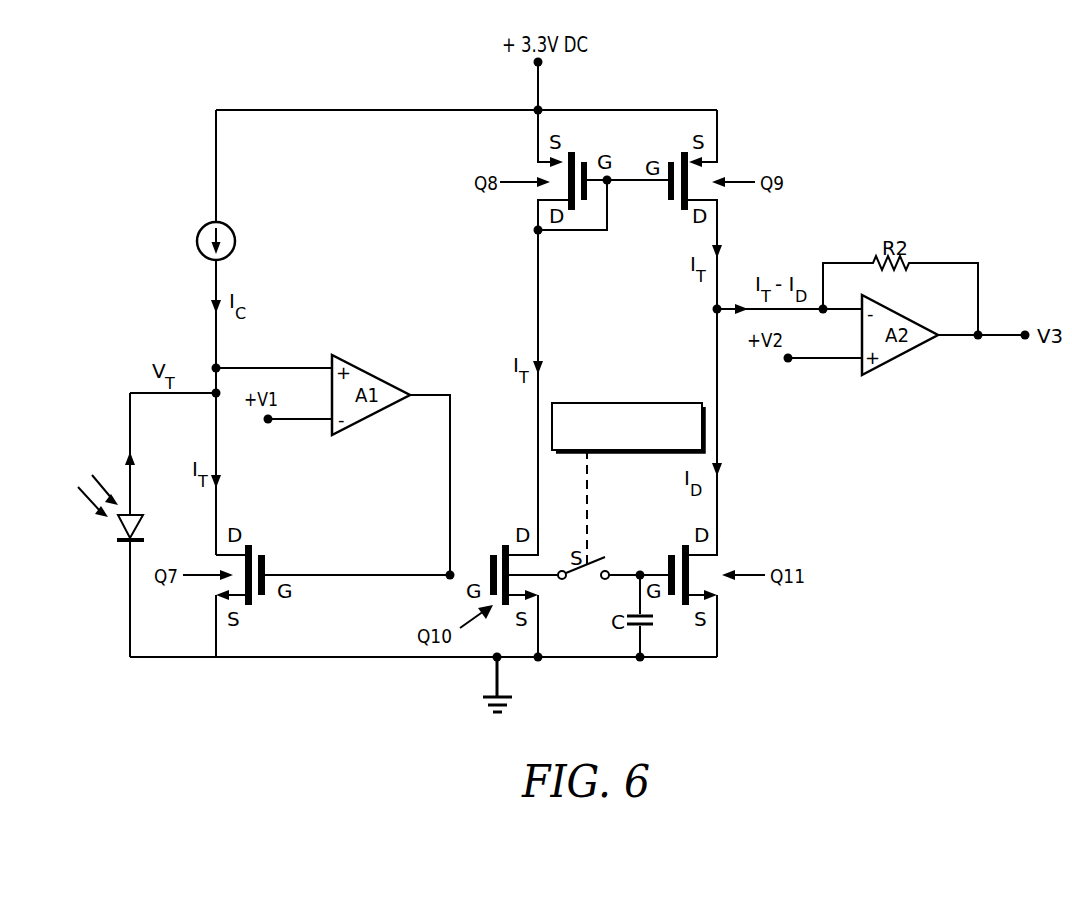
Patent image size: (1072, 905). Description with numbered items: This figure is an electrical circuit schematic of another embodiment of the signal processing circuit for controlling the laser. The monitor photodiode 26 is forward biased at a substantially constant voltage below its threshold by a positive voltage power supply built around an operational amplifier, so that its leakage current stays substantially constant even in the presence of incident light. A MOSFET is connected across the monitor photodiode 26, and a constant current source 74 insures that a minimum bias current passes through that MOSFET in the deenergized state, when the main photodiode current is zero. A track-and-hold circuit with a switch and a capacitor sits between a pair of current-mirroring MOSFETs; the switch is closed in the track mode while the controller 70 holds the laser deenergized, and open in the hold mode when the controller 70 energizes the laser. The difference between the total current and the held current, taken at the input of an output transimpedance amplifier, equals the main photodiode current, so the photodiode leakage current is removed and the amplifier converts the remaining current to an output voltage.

The constant current source 74 is at (197, 240).
The monitor photodiode 26 is at (121, 543).
The controller 70 is at (625, 403).